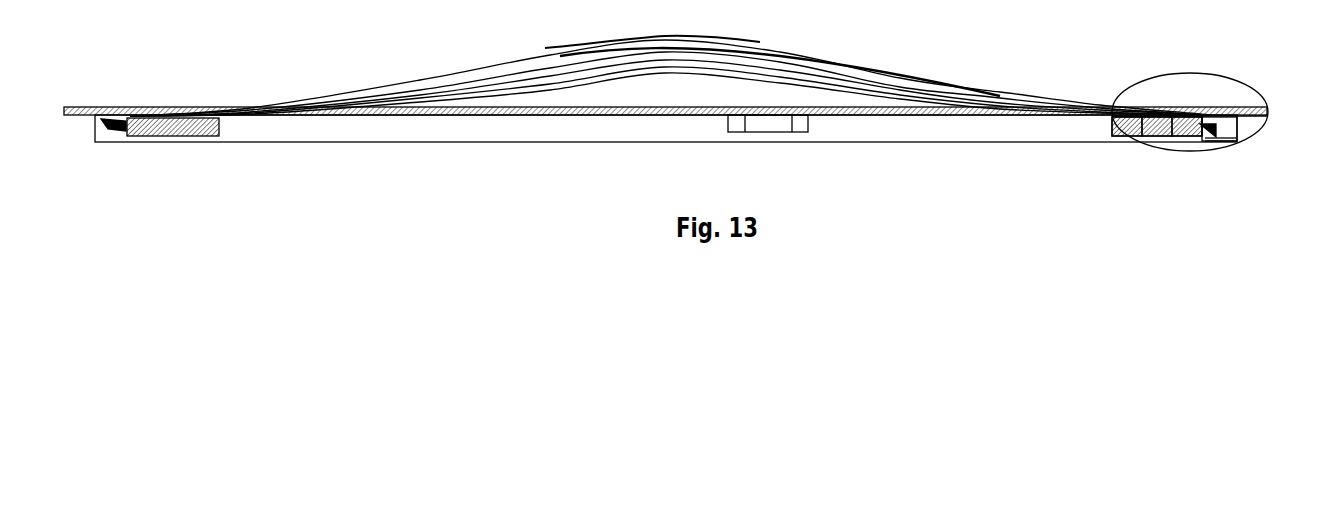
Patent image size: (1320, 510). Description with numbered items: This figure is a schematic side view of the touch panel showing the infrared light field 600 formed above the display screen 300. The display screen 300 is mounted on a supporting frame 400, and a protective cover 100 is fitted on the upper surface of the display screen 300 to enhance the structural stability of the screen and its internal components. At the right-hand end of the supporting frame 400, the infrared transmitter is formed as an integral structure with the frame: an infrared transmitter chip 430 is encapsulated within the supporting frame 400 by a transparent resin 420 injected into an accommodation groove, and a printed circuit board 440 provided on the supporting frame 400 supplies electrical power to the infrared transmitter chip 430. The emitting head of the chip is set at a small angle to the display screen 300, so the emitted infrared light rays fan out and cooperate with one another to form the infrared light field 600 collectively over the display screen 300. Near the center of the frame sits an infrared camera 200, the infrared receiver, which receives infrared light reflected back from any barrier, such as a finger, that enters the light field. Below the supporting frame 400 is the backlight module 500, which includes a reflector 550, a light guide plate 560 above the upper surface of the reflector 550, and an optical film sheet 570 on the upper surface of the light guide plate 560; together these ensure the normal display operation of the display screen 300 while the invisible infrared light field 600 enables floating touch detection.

The protective cover 100 is at (1196, 112).
The infrared camera 200 is at (760, 142).
The display screen 300 is at (1213, 111).
The supporting frame 400 is at (1240, 119).
The transparent resin 420 is at (1216, 127).
The infrared transmitter chip 430 is at (1222, 133).
The printed circuit board 440 is at (1226, 141).
The backlight module 500 is at (1210, 178).
The reflector 550 is at (1124, 141).
The light guide plate 560 is at (1152, 141).
The optical film sheet 570 is at (1188, 141).
The infrared light field 600 is at (822, 75).